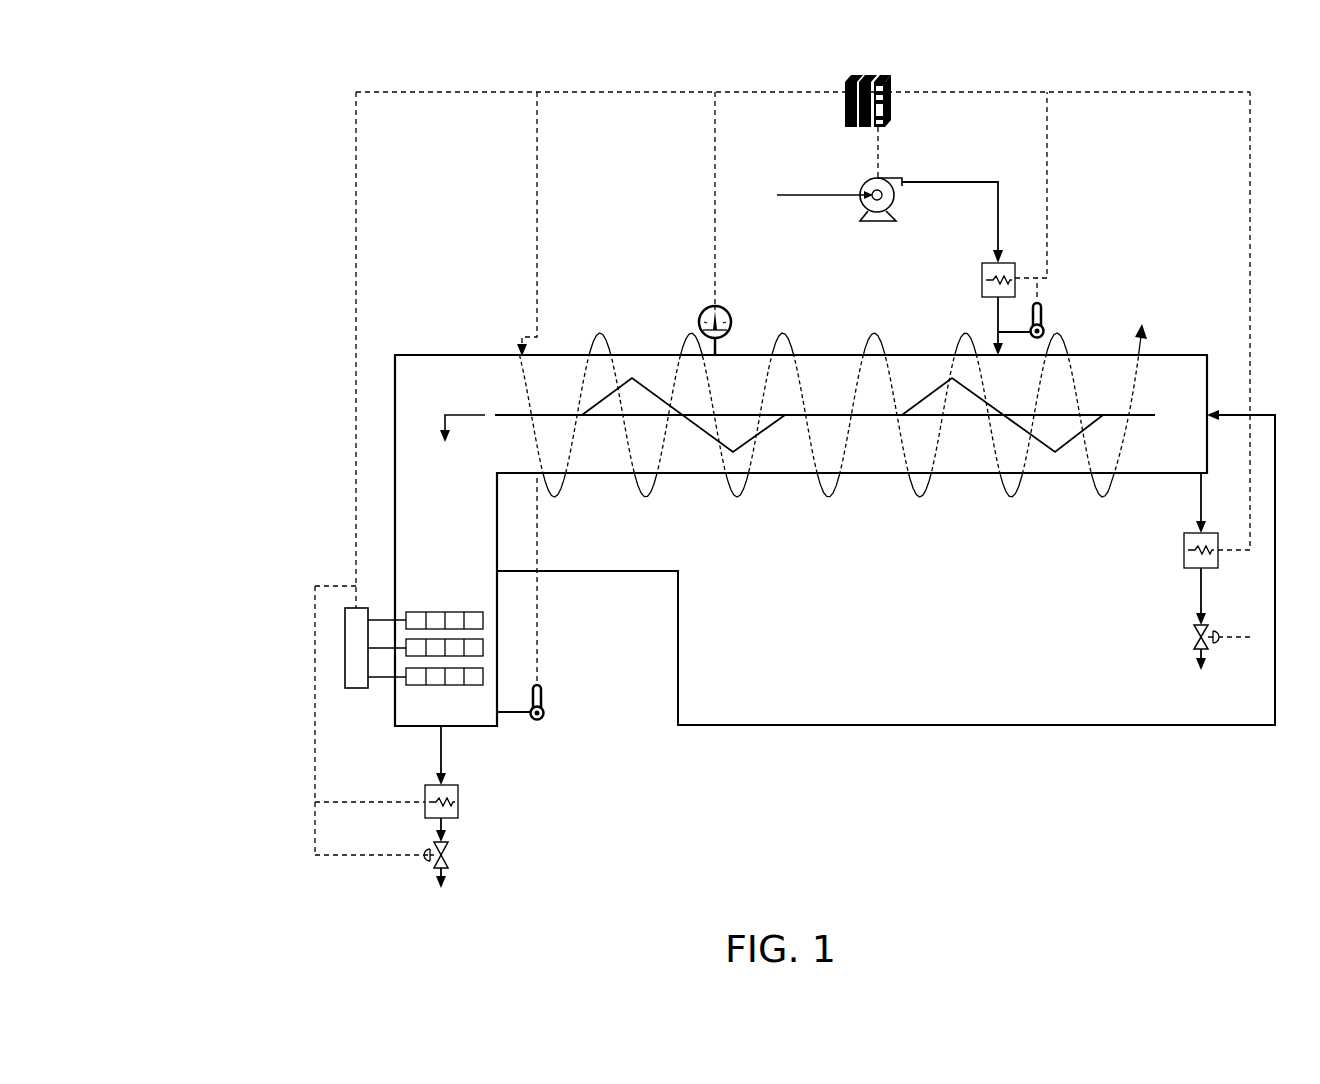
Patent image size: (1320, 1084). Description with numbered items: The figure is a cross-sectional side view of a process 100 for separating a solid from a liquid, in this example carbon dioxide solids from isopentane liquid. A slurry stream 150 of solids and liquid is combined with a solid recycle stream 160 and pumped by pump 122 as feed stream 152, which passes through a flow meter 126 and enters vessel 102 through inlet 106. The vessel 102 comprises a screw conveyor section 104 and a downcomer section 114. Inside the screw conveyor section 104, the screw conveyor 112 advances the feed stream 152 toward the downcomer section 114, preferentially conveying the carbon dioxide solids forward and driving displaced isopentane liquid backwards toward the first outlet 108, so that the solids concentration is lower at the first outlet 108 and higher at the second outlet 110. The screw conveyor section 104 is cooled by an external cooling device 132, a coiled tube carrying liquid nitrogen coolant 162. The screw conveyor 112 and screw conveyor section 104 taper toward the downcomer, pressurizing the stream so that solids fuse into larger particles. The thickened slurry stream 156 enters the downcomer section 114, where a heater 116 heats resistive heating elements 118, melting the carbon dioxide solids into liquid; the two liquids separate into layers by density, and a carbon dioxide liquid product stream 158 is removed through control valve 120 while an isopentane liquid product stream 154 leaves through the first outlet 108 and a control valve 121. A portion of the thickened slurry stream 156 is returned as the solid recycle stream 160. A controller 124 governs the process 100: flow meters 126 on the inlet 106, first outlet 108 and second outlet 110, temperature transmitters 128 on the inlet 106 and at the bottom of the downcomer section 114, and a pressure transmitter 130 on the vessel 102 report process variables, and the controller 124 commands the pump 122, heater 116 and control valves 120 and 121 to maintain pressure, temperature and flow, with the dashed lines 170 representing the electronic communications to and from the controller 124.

The process 100 is at (235, 95).
The vessel 102 is at (410, 355).
The screw conveyor section 104 is at (648, 355).
The inlet 106 is at (995, 350).
The first outlet 108 is at (1200, 473).
The second outlet 110 is at (440, 728).
The screw conveyor 112 is at (690, 423).
The downcomer section 114 is at (395, 555).
The heater 116 is at (360, 690).
The resistive heating elements 118 is at (445, 612).
The control valve 120 is at (448, 858).
The control valve 121 is at (1195, 645).
The pump 122 is at (862, 185).
The controller 124 is at (891, 76).
The flow meter 126 is at (982, 290).
The temperature transmitter 128 is at (1048, 312).
The pressure transmitter 130 is at (731, 318).
The external cooling device 132 is at (830, 497).
The slurry stream 150 is at (803, 196).
The feed stream 152 is at (947, 182).
The isopentane liquid product stream 154 is at (1200, 500).
The thickened slurry stream 156 is at (453, 444).
The carbon dioxide liquid product stream 158 is at (438, 895).
The solid recycle stream 160 is at (748, 722).
The liquid nitrogen coolant 162 is at (521, 345).
The dashed lines 170 is at (803, 92).